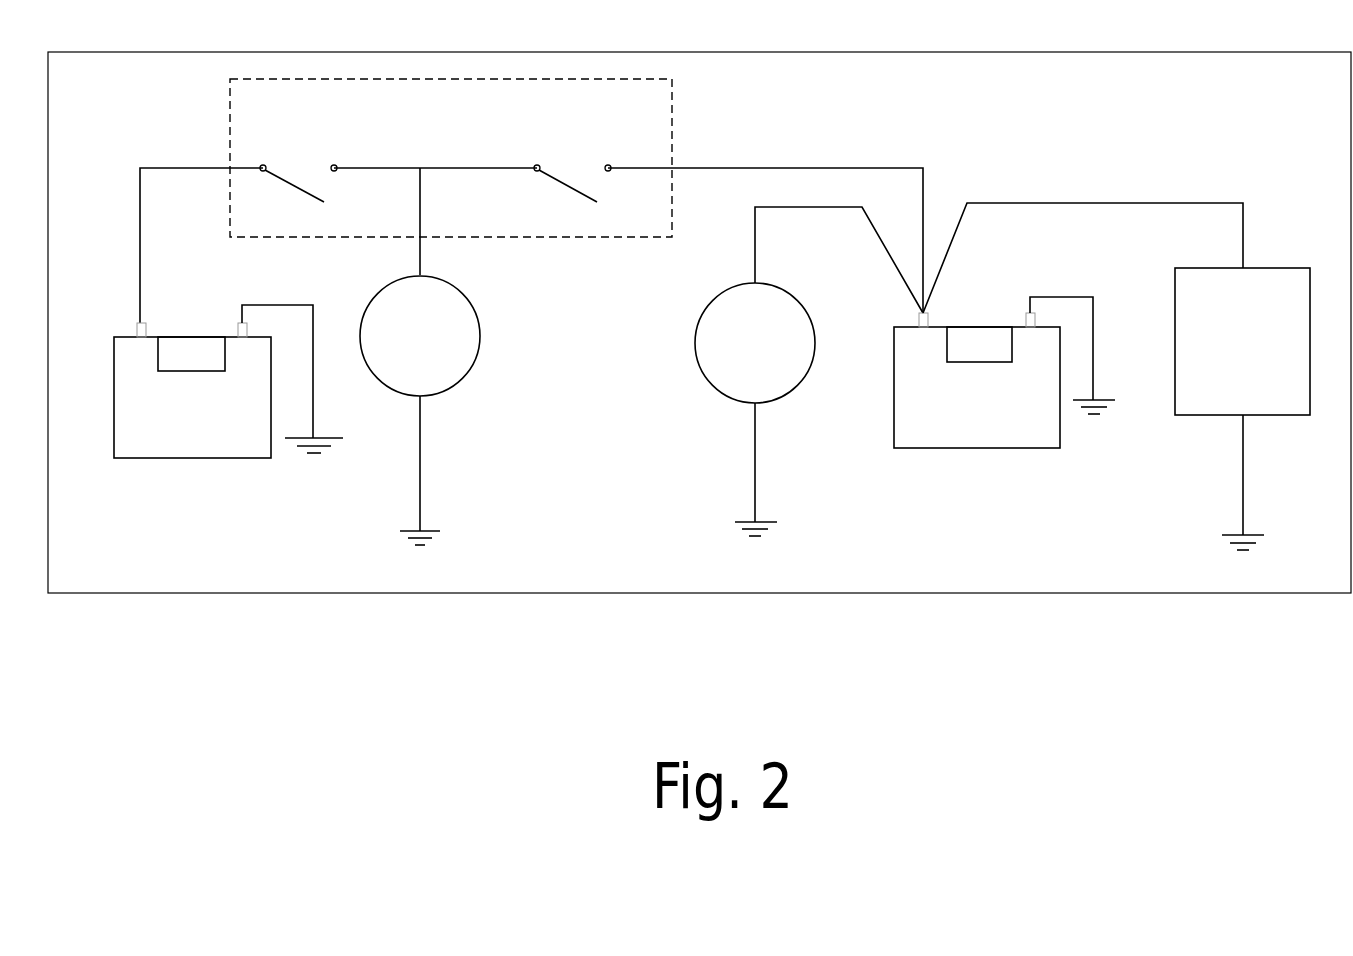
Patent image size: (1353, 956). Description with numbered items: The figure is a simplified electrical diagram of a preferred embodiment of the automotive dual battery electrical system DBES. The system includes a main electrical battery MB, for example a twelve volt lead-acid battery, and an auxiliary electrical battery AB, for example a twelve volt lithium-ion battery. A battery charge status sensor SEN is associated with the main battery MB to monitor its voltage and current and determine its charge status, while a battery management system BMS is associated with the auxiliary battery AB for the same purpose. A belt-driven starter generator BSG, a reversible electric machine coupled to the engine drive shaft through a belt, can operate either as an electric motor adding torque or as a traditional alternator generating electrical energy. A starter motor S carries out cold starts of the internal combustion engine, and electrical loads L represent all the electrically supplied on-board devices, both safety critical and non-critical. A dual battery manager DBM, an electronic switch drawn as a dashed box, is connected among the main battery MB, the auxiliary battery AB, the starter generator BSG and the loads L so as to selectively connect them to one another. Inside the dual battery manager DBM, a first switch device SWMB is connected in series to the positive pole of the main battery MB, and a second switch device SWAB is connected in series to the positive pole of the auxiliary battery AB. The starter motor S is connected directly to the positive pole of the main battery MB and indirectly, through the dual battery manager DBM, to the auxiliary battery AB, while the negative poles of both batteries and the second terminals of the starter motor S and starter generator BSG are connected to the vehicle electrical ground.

The automotive dual battery electrical system DBES is at (699, 322).
The dual battery manager DBM is at (531, 201).
The second switch device SWAB is at (298, 166).
The first switch device SWMB is at (572, 167).
The auxiliary electrical battery AB is at (228, 381).
The battery management system BMS is at (191, 354).
The belt-driven starter generator BSG is at (420, 410).
The starter motor S is at (809, 371).
The main electrical battery MB is at (1004, 372).
The battery charge status sensor SEN is at (979, 344).
The electrical loads L is at (1116, 376).